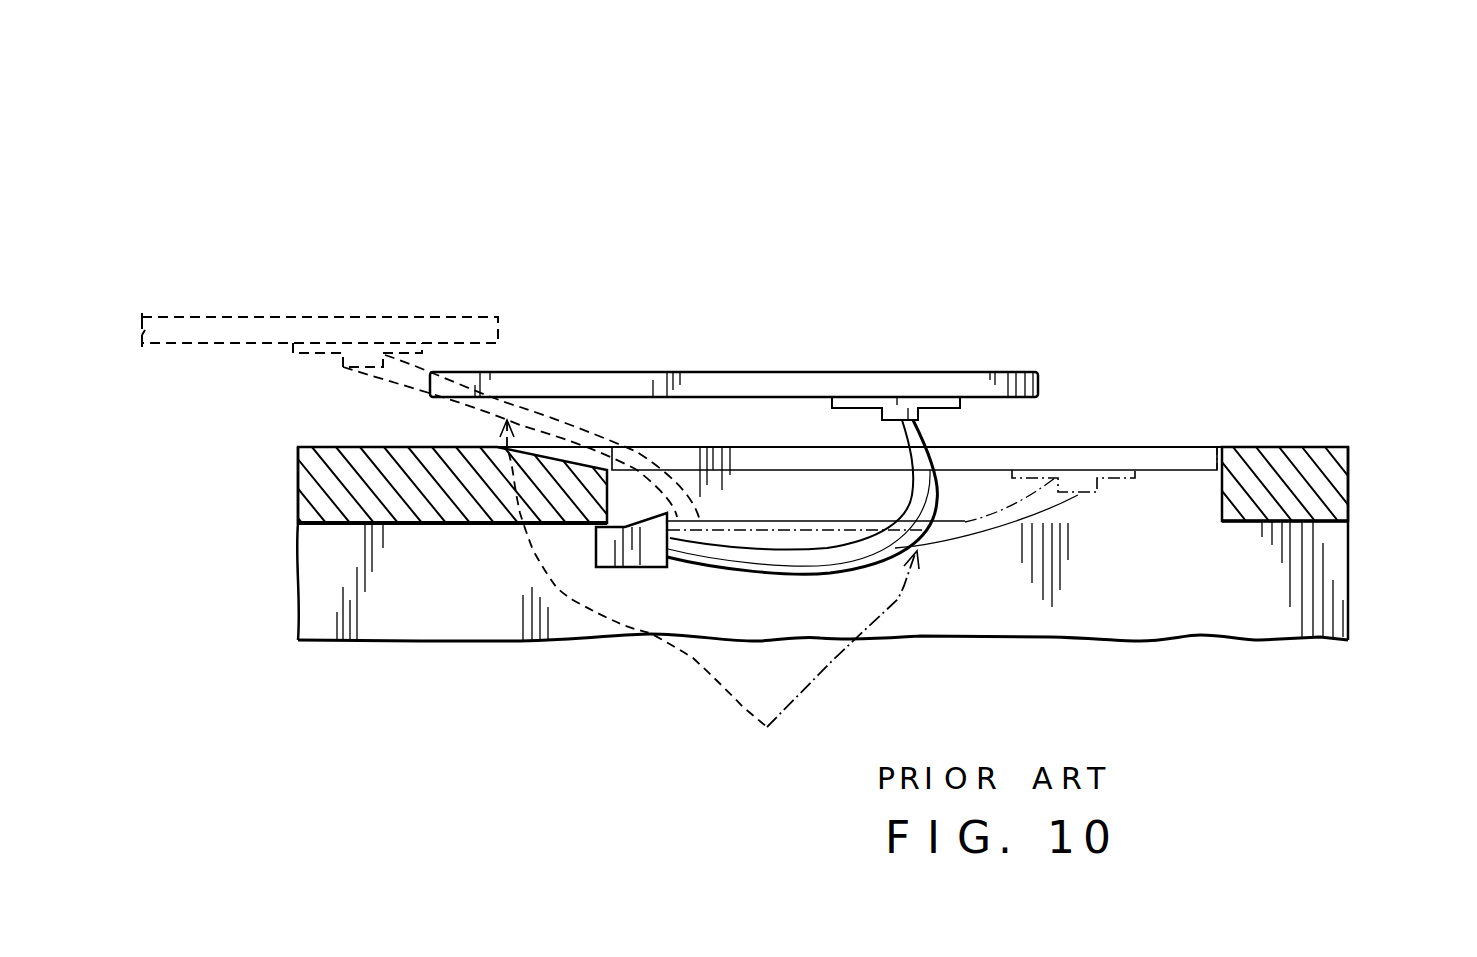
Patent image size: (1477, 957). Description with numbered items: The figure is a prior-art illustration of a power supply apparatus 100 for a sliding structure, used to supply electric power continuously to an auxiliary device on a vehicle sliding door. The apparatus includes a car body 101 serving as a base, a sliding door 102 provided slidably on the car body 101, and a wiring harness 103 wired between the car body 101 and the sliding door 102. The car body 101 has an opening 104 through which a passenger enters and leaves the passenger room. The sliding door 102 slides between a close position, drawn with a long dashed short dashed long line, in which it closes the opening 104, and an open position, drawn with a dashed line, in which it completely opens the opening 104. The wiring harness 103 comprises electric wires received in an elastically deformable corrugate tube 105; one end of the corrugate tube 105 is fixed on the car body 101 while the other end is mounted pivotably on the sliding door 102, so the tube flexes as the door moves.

The power supply apparatus 100 is at (797, 414).
The car body 101 is at (1350, 543).
The sliding door 102 is at (323, 317).
The wiring harness 103 is at (709, 595).
The opening 104 is at (1210, 490).
The corrugate tube 105 is at (563, 422).